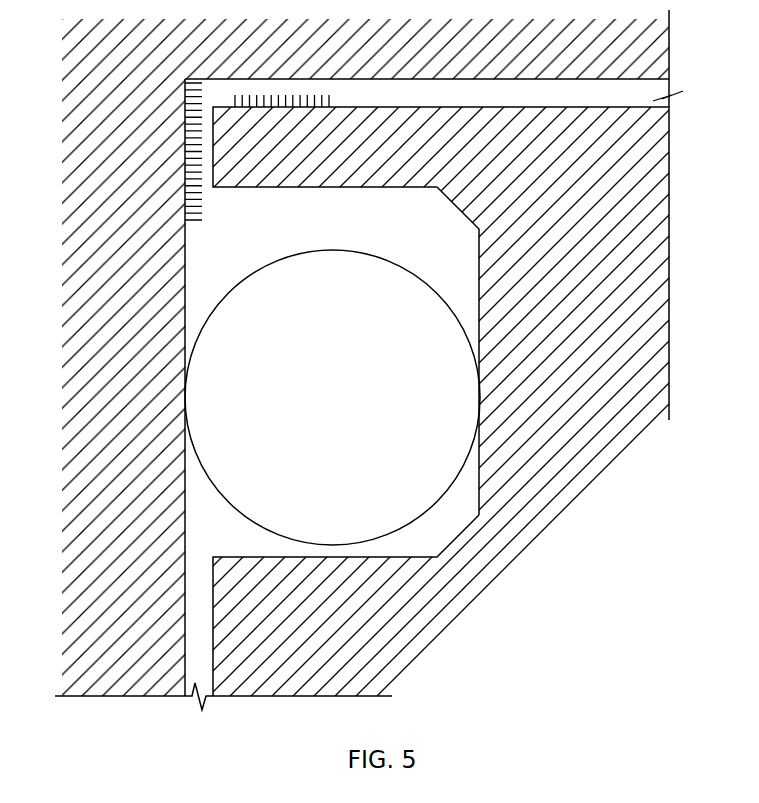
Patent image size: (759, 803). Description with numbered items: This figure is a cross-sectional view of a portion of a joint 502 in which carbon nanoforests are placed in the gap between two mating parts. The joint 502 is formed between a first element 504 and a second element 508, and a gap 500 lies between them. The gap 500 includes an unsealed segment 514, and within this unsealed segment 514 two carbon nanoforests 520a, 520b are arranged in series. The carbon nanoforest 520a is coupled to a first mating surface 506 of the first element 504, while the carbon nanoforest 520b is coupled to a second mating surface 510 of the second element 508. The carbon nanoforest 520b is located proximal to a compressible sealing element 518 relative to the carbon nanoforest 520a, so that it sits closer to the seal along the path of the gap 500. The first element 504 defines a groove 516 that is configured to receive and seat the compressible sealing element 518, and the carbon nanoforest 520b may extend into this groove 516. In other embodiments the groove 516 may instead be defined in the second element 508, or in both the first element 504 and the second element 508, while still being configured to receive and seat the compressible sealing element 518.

The gap 500 is at (420, 78).
The joint 502 is at (701, 64).
The first element 504 is at (571, 377).
The first mating surface 506 is at (500, 107).
The second element 508 is at (105, 375).
The second mating surface 510 is at (577, 78).
The unsealed segment 514 is at (635, 97).
The groove 516 is at (405, 237).
The compressible sealing element 518 is at (315, 408).
The carbon nanoforest 520a is at (235, 118).
The carbon nanoforest 520b is at (173, 83).